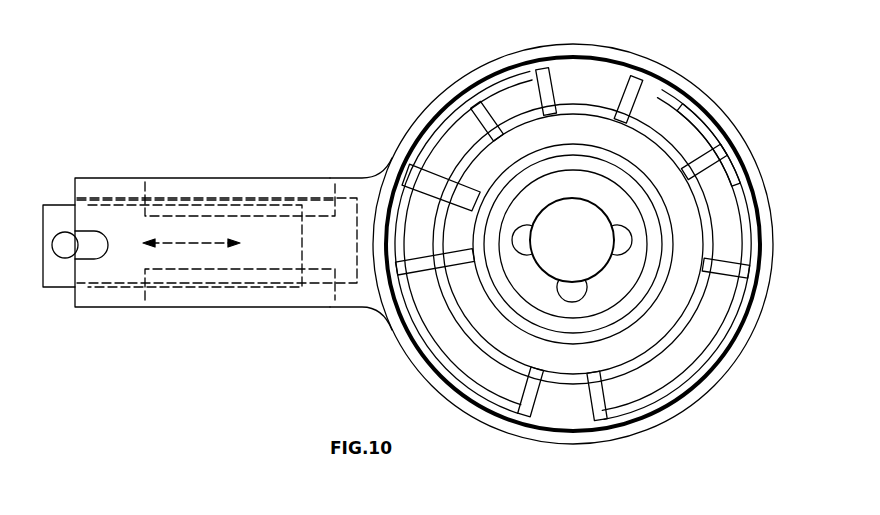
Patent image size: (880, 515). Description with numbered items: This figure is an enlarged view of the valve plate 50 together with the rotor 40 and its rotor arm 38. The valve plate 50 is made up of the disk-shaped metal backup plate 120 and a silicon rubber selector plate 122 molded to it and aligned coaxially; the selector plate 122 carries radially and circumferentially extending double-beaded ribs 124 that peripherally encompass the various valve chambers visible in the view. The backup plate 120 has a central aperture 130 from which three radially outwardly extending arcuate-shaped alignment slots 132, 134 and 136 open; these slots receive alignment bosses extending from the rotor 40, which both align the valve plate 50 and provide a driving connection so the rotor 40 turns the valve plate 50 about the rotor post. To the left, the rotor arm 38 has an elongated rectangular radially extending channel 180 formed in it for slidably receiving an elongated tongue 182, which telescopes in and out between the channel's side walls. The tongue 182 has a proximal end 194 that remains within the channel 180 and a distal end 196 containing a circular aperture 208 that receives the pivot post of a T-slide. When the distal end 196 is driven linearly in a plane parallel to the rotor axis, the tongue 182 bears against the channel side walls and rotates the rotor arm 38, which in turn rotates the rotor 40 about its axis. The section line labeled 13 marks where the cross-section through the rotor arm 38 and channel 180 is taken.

The rotor 40 is at (405, 118).
The rotor arm 38 is at (247, 298).
The valve plate 50 is at (458, 330).
The selector plate 122 is at (512, 180).
The tabs 124 is at (707, 173).
The central aperture 130 is at (581, 218).
The backup plate 120 is at (616, 280).
The alignment slot 132 is at (630, 246).
The alignment slot 134 is at (572, 292).
The alignment slot 136 is at (518, 246).
The channel 180 is at (348, 278).
The tongue 182 is at (58, 271).
The proximal end 194 is at (305, 227).
The distal end 196 is at (37, 227).
The circular aperture 208 is at (63, 243).
The section line 13- 13 is at (197, 178).